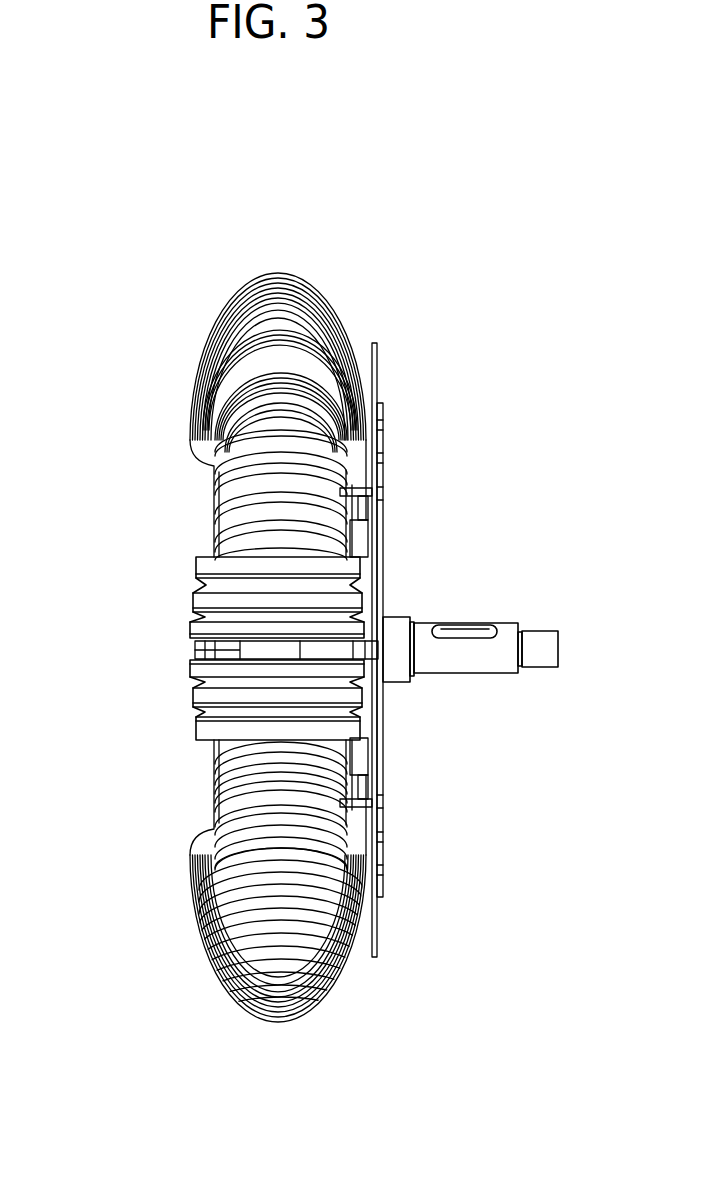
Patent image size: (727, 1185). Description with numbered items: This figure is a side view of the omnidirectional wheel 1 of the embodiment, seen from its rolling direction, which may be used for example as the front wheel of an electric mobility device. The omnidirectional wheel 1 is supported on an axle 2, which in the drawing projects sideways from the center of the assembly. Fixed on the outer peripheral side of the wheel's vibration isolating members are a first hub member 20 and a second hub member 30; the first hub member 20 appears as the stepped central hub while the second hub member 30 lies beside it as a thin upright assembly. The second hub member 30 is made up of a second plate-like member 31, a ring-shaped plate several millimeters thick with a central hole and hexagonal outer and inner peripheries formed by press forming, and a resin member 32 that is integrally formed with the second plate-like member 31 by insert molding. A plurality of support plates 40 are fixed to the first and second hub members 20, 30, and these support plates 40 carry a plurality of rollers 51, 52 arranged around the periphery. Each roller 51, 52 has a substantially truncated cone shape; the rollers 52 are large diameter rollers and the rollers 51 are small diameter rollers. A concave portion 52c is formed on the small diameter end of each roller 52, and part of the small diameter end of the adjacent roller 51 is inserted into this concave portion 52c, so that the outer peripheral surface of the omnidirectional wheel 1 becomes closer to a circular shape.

The omnidirectional wheel 1 is at (258, 264).
The axle 2 is at (505, 622).
The first hub member 20 is at (202, 547).
The second hub member 30 is at (413, 594).
The second plate-like member 31 is at (378, 369).
The resin member 32 is at (384, 458).
The support plate 40 is at (230, 650).
The roller 51 is at (303, 278).
The roller 52 is at (203, 342).
The concave portion 52c is at (218, 440).